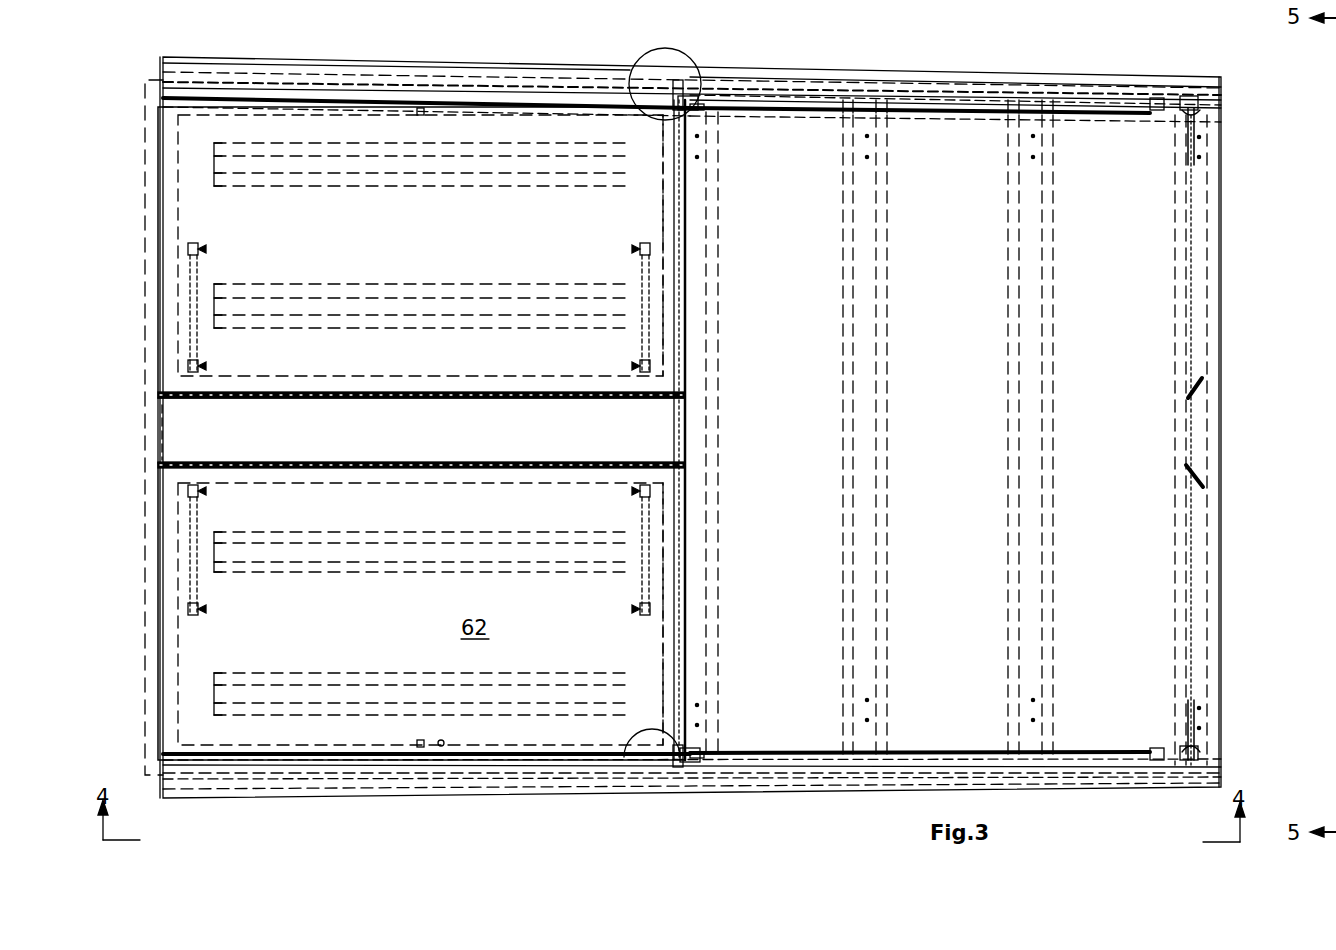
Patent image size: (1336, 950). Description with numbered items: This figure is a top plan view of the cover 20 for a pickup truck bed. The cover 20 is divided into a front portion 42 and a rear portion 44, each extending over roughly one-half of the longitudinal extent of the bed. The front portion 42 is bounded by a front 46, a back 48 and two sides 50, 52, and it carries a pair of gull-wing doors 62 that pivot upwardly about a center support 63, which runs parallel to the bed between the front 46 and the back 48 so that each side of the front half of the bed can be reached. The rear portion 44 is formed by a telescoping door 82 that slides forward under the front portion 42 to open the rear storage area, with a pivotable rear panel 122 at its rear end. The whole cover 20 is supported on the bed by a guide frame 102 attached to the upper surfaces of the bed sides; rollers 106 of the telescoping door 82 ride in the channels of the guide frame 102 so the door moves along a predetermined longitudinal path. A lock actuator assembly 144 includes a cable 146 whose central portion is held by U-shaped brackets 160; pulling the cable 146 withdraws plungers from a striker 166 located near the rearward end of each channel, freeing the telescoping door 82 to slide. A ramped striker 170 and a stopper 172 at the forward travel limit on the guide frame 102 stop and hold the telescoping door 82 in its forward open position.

The cover 20 is at (716, 66).
The front portion 42 is at (481, 66).
The rear portion 44 is at (898, 74).
The front 46 is at (160, 416).
The back 48 is at (686, 435).
The side 50 is at (254, 786).
The side 52 is at (368, 72).
The gull-wing doors 62 is at (484, 262).
The center support 63 is at (428, 449).
The telescoping door 82 is at (958, 445).
The guide frame 102 is at (1082, 76).
The rollers 106 is at (686, 94).
The rear panel 122 is at (1224, 556).
The lock actuator assembly 144 is at (1200, 428).
The cable 146 is at (1200, 292).
The U-shaped brackets 160 is at (1196, 382).
The striker 166 is at (1200, 112).
The ramped striker 170 is at (700, 118).
The stopper 172 is at (640, 82).